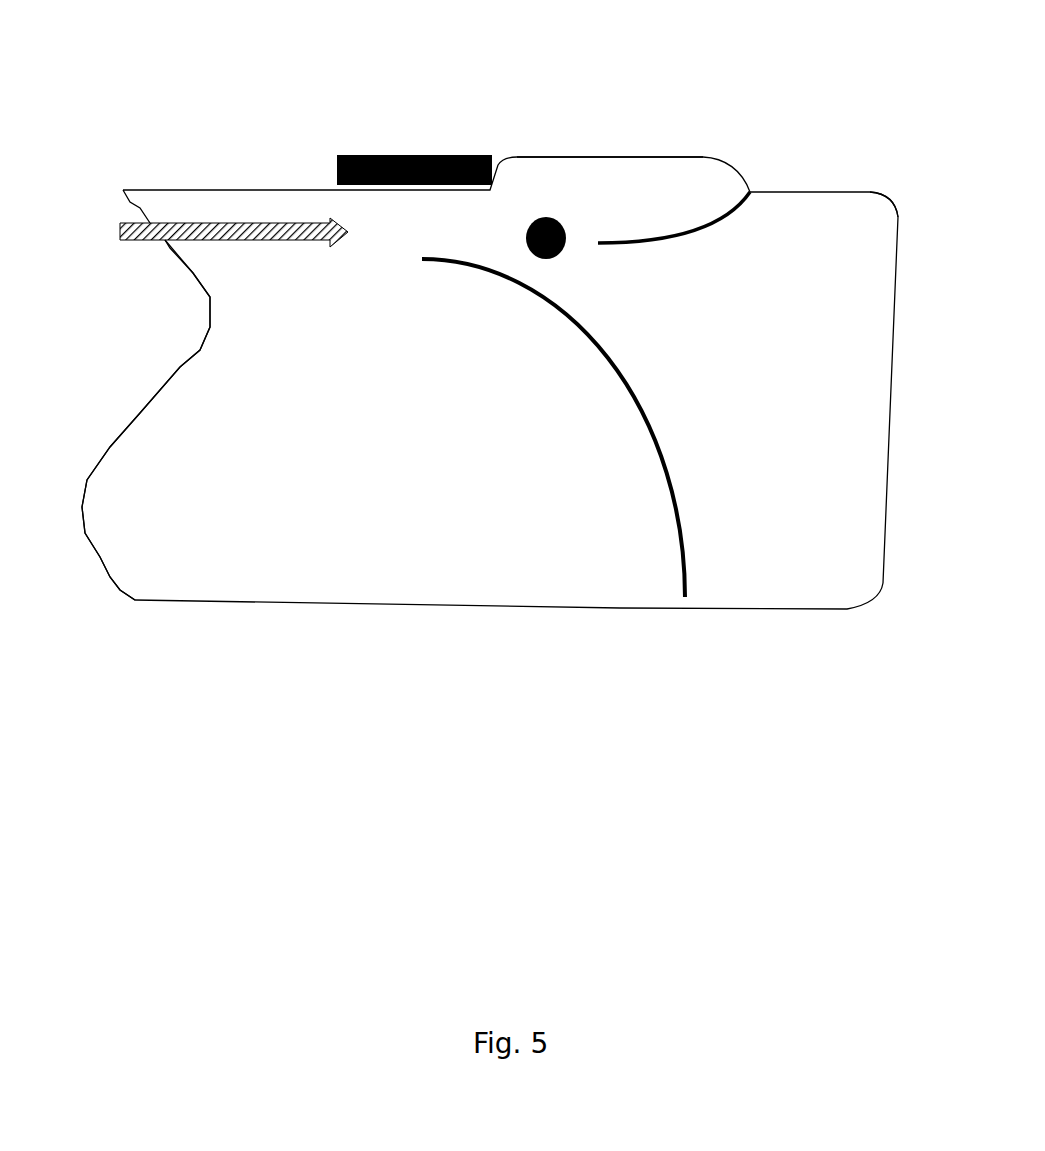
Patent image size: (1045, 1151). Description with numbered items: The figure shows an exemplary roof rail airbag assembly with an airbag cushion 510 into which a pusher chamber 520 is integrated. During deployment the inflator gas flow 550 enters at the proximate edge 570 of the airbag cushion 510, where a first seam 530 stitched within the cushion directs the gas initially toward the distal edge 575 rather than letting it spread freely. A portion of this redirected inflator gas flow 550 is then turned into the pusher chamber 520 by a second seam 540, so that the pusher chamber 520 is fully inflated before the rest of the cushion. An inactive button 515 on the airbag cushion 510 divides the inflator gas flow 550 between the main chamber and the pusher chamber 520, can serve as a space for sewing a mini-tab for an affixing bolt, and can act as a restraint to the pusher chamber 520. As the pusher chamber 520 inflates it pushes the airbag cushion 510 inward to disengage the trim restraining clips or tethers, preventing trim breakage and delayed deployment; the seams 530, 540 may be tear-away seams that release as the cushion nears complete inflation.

The airbag cushion 510 is at (263, 187).
The inactive button 515 is at (439, 153).
The pusher chamber 520 is at (682, 155).
The first seam 530 is at (652, 470).
The second seam 540 is at (691, 250).
The inflator gas flow 550 is at (149, 254).
The proximate edge 570 is at (138, 413).
The distal edge 575 is at (884, 197).